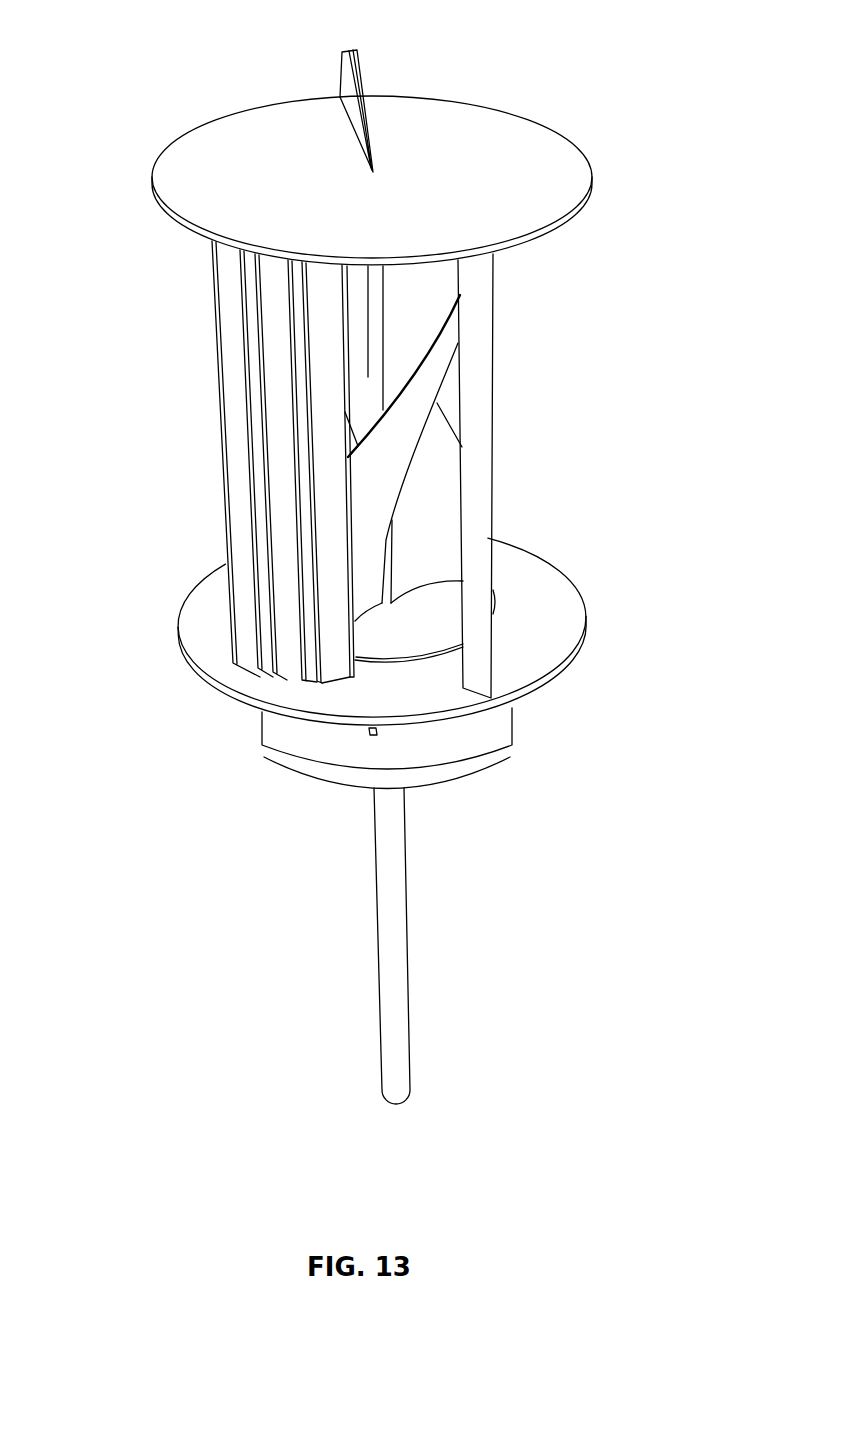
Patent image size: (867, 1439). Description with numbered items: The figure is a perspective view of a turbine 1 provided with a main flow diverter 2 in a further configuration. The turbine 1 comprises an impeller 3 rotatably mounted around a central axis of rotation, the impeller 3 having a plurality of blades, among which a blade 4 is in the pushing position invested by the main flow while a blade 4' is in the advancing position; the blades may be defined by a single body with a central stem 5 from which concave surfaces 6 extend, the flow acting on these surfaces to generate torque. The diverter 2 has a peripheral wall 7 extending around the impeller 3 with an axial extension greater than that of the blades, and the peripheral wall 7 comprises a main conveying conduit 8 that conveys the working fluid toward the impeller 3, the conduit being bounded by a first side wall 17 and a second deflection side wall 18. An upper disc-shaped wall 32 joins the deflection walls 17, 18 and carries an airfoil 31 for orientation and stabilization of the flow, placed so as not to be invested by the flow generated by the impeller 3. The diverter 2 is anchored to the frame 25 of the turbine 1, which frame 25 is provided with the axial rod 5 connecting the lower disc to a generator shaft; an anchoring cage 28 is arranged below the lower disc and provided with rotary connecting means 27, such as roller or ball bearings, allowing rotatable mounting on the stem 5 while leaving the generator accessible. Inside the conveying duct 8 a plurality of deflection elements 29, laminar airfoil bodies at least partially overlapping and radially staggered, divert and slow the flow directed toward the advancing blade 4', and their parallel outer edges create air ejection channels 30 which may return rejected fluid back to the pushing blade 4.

The turbine 1 is at (622, 110).
The main flow diverter 2 is at (218, 533).
The impeller 3 is at (465, 344).
The blade 4 is at (469, 473).
The blade 4' is at (494, 362).
The central stem 5 is at (393, 956).
The concave surface 6 is at (426, 535).
The peripheral wall 7 is at (196, 399).
The main conveying conduit 8 is at (446, 679).
The first side wall 17 is at (480, 497).
The second deflection side wall 18 is at (337, 660).
The frame 25 is at (530, 713).
The connecting means 27 is at (357, 777).
The anchoring cage 28 is at (378, 736).
The deflection elements 29 is at (243, 617).
The air ejection channels 30 is at (270, 662).
The airfoil 31 is at (343, 77).
The upper disc-shaped wall 32 is at (578, 162).